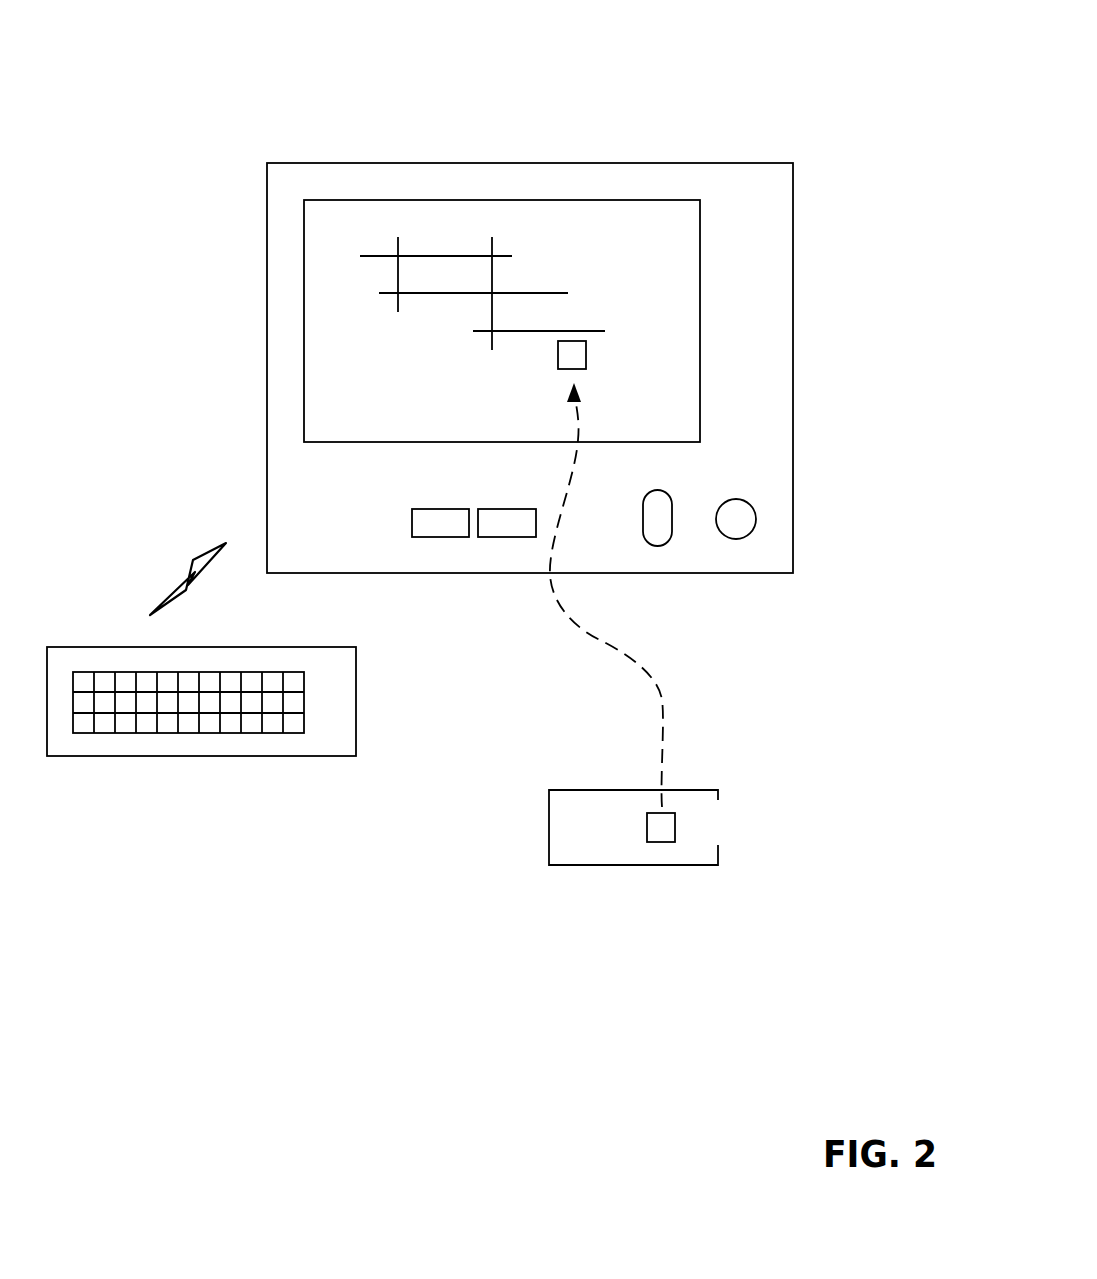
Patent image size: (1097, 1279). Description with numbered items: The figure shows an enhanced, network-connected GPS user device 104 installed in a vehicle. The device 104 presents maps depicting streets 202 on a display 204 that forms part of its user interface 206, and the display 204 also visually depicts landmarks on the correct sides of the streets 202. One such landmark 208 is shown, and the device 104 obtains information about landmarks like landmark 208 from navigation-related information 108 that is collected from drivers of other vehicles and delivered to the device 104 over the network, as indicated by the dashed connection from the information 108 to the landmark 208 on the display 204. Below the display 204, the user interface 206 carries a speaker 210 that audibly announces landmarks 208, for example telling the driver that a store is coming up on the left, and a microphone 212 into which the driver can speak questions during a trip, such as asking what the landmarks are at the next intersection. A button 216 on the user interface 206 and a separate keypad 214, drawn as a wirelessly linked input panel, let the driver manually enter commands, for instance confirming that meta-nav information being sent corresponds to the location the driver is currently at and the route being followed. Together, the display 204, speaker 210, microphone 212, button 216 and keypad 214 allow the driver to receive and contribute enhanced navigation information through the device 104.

The GPS user device 104 is at (866, 114).
The navigation-related information 108 is at (612, 836).
The streets 202 is at (562, 268).
The display 204 is at (676, 290).
The user interface 206 is at (767, 218).
The landmark 208 is at (670, 827).
The speaker 210 is at (745, 507).
The microphone 212 is at (648, 502).
The keypad 214 is at (342, 677).
The button 216 is at (391, 511).